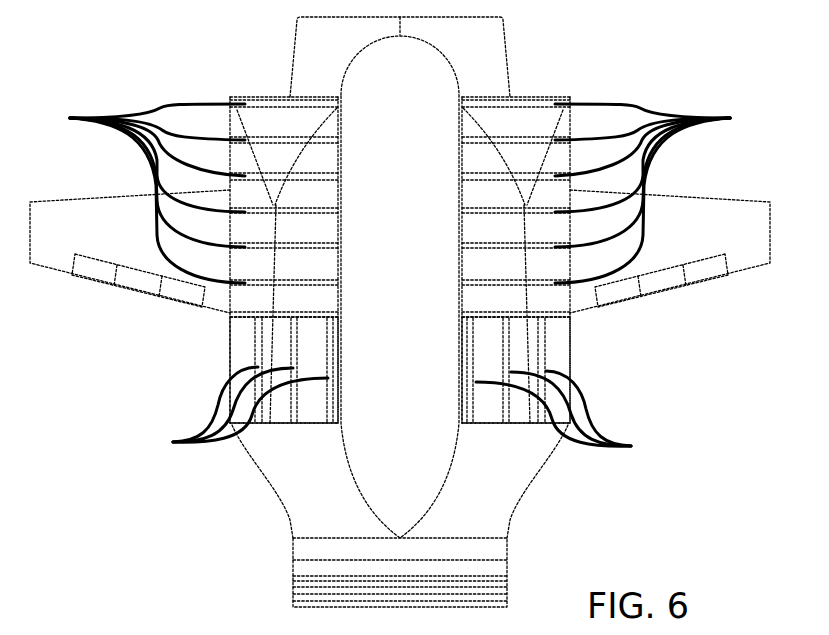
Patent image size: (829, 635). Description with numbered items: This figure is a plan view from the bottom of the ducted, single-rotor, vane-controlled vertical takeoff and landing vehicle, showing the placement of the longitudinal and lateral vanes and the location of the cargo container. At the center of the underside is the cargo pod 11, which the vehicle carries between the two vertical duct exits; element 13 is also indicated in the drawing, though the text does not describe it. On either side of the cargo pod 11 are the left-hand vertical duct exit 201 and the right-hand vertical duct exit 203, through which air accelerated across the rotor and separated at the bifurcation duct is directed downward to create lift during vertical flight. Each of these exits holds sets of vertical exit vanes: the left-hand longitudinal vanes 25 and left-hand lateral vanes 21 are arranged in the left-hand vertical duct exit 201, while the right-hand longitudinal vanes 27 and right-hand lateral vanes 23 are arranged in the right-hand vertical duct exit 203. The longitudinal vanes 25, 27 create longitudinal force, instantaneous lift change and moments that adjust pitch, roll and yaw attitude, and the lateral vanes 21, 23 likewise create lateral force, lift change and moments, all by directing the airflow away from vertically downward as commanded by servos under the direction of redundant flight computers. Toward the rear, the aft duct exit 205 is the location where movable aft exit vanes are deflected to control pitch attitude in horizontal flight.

The cargo pod 11 is at (387, 456).
The housing 13 is at (490, 60).
The left-hand lateral vanes 21 is at (571, 415).
The right-hand lateral vanes 23 is at (233, 411).
The left-hand longitudinal vanes 25 is at (660, 193).
The right-hand longitudinal vanes 27 is at (139, 193).
The left-hand vertical duct exit 201 is at (594, 348).
The right-hand vertical duct exit 203 is at (208, 339).
The aft duct exit 205 is at (266, 595).